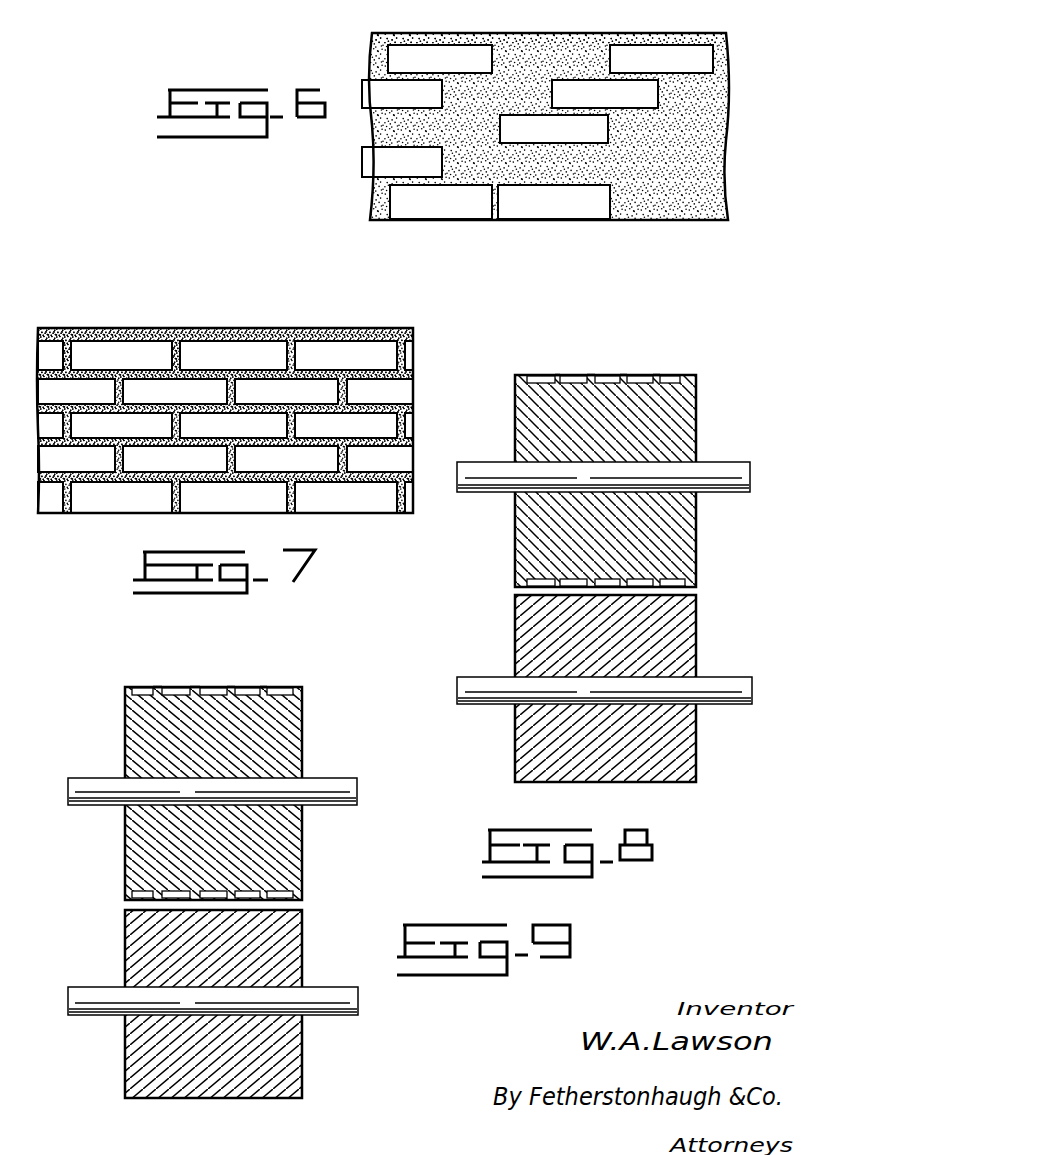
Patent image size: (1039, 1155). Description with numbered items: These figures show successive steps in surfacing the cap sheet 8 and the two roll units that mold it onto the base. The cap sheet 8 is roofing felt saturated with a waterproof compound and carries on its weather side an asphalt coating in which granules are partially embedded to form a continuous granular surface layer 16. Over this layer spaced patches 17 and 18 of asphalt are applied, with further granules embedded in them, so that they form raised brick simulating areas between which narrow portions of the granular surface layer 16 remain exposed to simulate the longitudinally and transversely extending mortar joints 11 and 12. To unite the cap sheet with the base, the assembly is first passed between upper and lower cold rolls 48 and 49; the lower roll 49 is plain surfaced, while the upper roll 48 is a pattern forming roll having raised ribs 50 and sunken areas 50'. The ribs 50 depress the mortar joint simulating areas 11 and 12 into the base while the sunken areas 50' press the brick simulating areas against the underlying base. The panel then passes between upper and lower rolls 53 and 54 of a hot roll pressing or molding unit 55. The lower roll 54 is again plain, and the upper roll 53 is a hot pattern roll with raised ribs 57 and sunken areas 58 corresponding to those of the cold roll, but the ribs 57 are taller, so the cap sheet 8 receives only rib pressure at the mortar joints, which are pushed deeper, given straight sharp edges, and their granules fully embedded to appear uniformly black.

In FIG. 6, the cap sheet 8 is at (665, 33).
In FIG. 7, the cap sheet 8 is at (387, 326).
In FIG. 7, the longitudinally extending mortar joint simulating areas 11 is at (44, 376).
In FIG. 7, the transversely extending mortar joint simulating areas 12 is at (78, 331).
In FIG. 6, the granular surface layer 16 is at (585, 14).
In FIG. 7, the granular surface layer 16 is at (290, 328).
In FIG. 6, the patches of asphalt 17 is at (386, 90).
In FIG. 7, the patches of asphalt 17 is at (138, 347).
In FIG. 7, the patches of asphalt 18 is at (47, 352).
In FIG. 8, the upper cold roll 48 is at (693, 538).
In FIG. 8, the lower cold roll 49 is at (692, 642).
In FIG. 8, the raised ribs 50 is at (638, 464).
In FIG. 8, the sunken areas 50' is at (567, 453).
In FIG. 9, the upper roll 53 is at (287, 842).
In FIG. 9, the lower roll 54 is at (287, 947).
In FIG. 9, the hot roll pressing or molding unit 55 is at (125, 862).
In FIG. 9, the raised ribs 57 is at (236, 690).
In FIG. 9, the sunken areas 58 is at (280, 690).